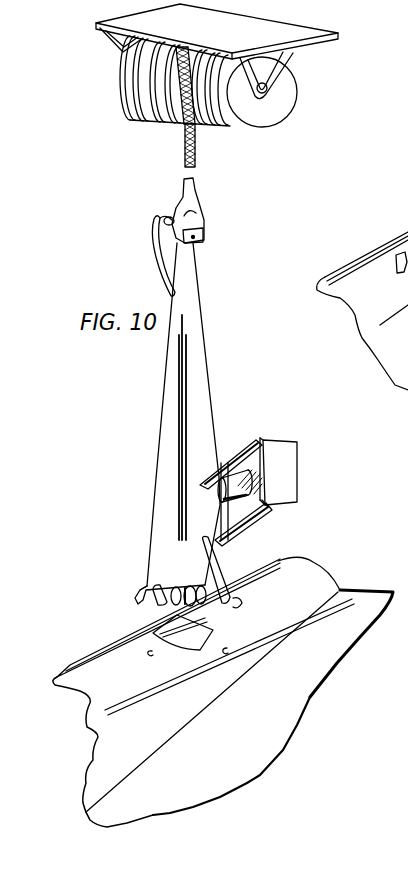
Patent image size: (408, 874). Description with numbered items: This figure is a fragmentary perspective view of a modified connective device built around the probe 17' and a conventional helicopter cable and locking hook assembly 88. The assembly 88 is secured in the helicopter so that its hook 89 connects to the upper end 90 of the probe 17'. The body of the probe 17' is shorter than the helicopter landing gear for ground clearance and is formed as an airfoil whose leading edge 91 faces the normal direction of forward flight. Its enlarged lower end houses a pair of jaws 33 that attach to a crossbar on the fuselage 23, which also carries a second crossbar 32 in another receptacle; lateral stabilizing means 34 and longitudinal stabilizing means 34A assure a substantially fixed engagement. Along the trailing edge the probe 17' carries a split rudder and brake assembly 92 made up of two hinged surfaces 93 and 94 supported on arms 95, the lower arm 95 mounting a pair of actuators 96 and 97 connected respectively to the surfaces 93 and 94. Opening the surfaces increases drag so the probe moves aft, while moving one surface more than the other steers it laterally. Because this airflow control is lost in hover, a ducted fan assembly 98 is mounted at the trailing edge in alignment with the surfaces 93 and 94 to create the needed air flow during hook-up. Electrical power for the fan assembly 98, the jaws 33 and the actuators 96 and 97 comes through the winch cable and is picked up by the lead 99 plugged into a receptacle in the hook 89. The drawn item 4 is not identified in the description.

The helicopter cable and locking hook assembly 88 is at (157, 126).
The hook 89 is at (205, 205).
The lead 99 is at (150, 239).
The upper end of the probe 90 is at (175, 423).
The leading edge 91 is at (135, 504).
The probe 17' is at (150, 423).
The split rudder and brake assembly 92 is at (273, 502).
The hinged surface 93 is at (296, 472).
The hinged surface 94 is at (269, 436).
The arms 95 is at (226, 466).
The actuator 96 is at (257, 521).
The ducted fan assembly 98 is at (234, 478).
The joint 4 is at (272, 507).
The actuator 97 is at (236, 523).
The lateral stabilizing means 34 is at (237, 602).
The jaws 33 is at (152, 618).
The longitudinal stabilizing means 34A is at (140, 593).
The fuselage 23 is at (240, 773).
The second crossbar 32 is at (400, 238).